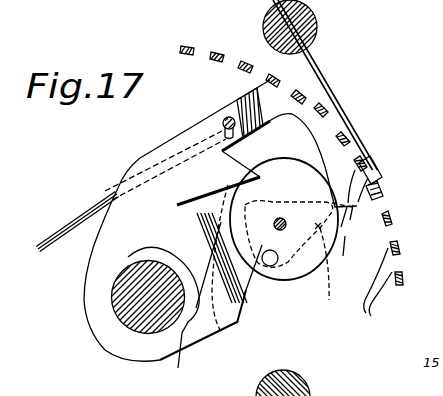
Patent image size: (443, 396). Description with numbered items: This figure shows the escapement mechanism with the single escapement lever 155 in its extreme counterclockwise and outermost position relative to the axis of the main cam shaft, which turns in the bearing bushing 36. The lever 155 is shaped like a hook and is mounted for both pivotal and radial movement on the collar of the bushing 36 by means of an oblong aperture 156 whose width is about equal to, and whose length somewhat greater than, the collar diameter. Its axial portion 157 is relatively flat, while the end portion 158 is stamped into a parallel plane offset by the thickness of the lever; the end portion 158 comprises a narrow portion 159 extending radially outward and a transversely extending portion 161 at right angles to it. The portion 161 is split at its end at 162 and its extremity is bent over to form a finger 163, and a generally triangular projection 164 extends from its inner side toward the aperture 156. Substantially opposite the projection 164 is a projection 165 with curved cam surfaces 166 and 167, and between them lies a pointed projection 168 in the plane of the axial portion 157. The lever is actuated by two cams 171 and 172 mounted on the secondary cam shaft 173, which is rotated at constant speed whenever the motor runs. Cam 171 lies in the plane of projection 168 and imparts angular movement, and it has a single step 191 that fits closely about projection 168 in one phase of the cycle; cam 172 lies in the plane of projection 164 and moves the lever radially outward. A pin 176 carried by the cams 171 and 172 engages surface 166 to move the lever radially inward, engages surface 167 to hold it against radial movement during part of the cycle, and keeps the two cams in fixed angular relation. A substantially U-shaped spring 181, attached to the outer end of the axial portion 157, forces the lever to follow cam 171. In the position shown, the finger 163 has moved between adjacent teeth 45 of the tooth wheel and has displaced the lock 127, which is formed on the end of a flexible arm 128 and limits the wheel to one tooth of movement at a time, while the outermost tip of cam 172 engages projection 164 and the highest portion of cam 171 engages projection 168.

The flexible arm 128 is at (346, 110).
The lock 127 is at (373, 172).
The narrow portion 159 is at (258, 108).
The end portion 158 is at (307, 95).
The finger 163 is at (380, 182).
The transversely extending portion 161 is at (358, 137).
The axial portion 157 is at (158, 246).
The escapement lever 155 is at (102, 347).
The projection 165 is at (198, 345).
The curved cam surface 166 is at (237, 325).
The oblong aperture 156 is at (178, 366).
The bearing bushing 36 is at (137, 300).
The U-shaped spring 181 is at (67, 228).
The step 191 is at (228, 182).
The pointed projection 168 is at (235, 165).
The curved cam surface 167 is at (282, 244).
The secondary cam shaft 173 is at (283, 221).
The cam 171 is at (306, 268).
The cam 172 is at (318, 278).
The pin 176 is at (256, 296).
The split 162 is at (358, 220).
The triangular projection 164 is at (355, 246).
The rectangular teeth 45 is at (378, 288).